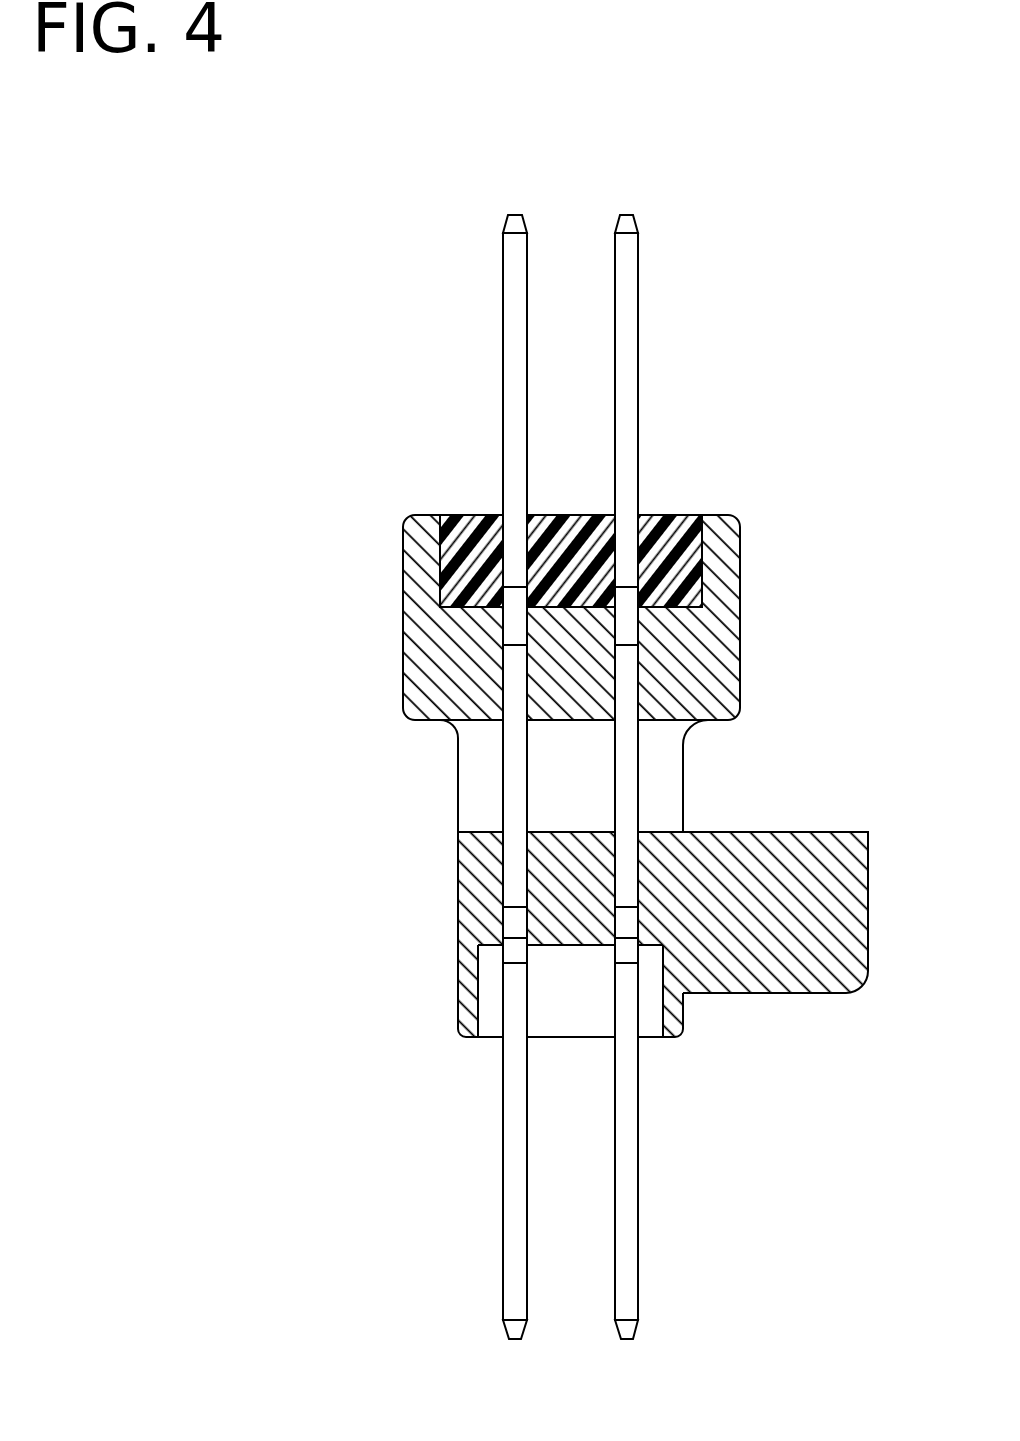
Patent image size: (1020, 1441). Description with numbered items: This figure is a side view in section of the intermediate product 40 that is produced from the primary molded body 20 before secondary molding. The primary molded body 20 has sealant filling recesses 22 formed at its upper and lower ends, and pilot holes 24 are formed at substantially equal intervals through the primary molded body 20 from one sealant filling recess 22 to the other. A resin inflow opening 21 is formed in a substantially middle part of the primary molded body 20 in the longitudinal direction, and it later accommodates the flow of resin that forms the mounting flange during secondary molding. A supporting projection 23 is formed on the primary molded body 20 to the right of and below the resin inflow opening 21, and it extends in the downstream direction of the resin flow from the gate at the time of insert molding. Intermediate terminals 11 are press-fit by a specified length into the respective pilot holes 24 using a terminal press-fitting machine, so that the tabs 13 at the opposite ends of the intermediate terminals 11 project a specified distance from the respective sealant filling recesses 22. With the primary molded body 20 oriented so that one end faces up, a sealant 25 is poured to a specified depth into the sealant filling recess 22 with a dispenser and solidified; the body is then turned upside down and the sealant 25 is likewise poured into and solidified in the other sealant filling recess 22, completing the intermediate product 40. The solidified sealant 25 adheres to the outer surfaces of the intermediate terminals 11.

The intermediate product 40 is at (251, 505).
The primary molded body 20 is at (771, 611).
The resin inflow opening 21 is at (482, 750).
The sealant filling recess 22 is at (442, 562).
The supporting projection 23 is at (825, 906).
The pilot hole 24 is at (640, 627).
The sealant 25 is at (673, 540).
The intermediate terminal 11 is at (515, 790).
The tab 13 is at (518, 222).